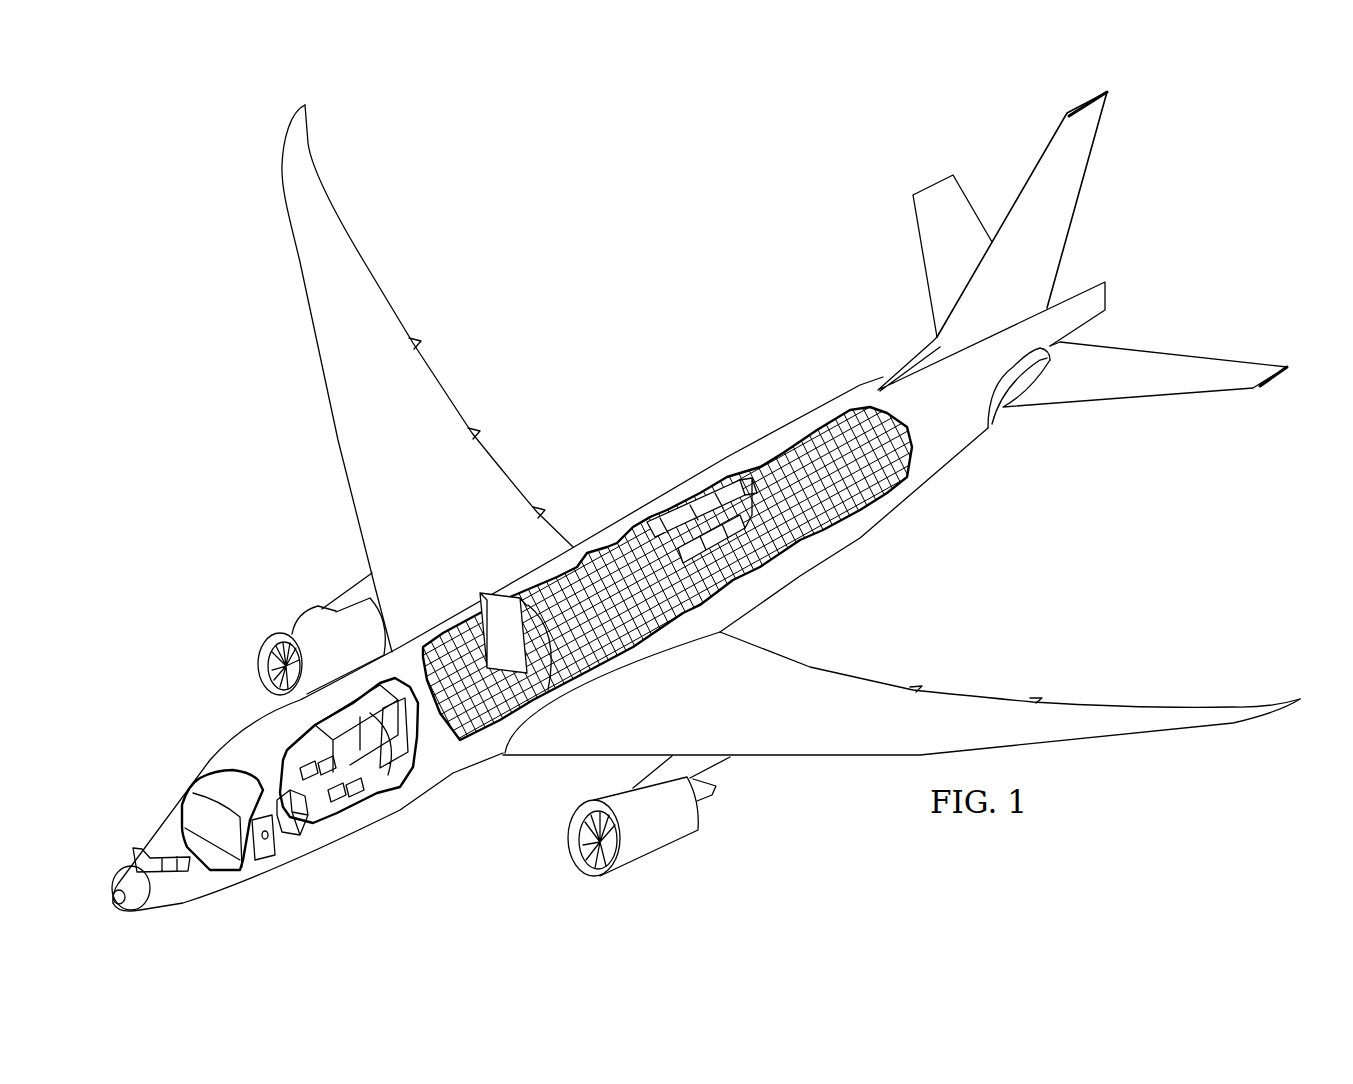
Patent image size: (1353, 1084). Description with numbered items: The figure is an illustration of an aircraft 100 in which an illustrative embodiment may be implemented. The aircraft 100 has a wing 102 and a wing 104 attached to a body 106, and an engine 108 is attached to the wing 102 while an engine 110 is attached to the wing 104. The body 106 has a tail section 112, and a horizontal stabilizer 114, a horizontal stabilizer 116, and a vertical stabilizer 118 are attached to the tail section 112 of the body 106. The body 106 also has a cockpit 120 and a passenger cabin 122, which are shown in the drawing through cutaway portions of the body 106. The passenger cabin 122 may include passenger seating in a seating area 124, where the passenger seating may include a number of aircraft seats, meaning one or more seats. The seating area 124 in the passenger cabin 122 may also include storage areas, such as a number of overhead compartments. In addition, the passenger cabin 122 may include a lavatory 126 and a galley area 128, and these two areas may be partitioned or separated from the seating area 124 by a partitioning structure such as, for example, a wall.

The aircraft 100 is at (704, 501).
The wing 102 is at (822, 760).
The wing 104 is at (313, 331).
The body 106 is at (600, 512).
The engine 108 is at (665, 848).
The engine 110 is at (306, 604).
The tail section 112 is at (1072, 249).
The horizontal stabilizer 114 is at (1180, 353).
The horizontal stabilizer 116 is at (922, 267).
The vertical stabilizer 118 is at (1078, 200).
The cockpit 120 is at (196, 817).
The passenger cabin 122 is at (714, 485).
The seating area 124 is at (480, 745).
The lavatory 126 is at (315, 843).
The galley area 128 is at (410, 778).